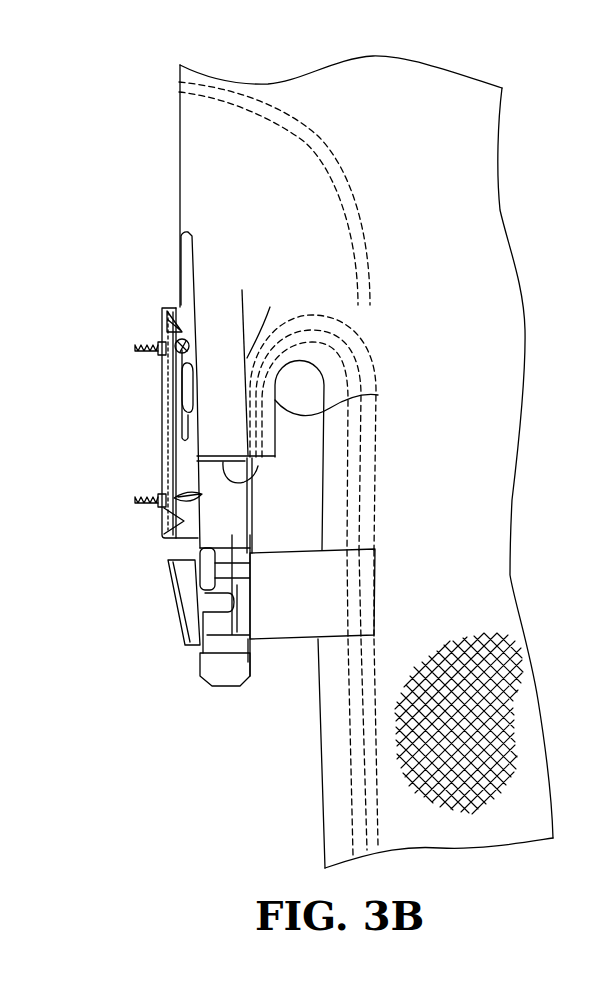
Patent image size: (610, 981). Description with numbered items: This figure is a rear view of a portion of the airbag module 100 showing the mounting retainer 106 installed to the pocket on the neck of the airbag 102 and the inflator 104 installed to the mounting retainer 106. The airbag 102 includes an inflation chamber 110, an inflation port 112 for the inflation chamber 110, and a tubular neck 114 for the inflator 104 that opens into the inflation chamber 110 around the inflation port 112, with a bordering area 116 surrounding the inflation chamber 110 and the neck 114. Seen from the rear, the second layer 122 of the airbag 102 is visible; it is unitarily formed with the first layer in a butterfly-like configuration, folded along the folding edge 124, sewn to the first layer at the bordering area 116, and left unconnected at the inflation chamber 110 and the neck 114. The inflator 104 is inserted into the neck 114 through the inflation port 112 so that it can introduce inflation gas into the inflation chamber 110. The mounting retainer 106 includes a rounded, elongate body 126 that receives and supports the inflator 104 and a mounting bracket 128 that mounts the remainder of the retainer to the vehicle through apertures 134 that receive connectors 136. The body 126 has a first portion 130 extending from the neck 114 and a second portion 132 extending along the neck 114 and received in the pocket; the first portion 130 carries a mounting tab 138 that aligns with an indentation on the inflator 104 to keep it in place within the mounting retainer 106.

The airbag module 100 is at (160, 113).
The airbag 102 is at (176, 148).
The inflator 104 is at (213, 650).
The mounting retainer 106 is at (200, 549).
The inflation chamber 110 is at (452, 113).
The inflation port 112 is at (245, 493).
The tubular neck 114 is at (378, 395).
The bordering area 116 is at (348, 787).
The second layer 122 is at (478, 166).
The folding edge 124 is at (176, 200).
The body 126 is at (153, 605).
The mounting bracket 128 is at (162, 308).
The first portion 130 is at (190, 647).
The second portion 132 is at (177, 308).
The apertures 134 is at (160, 352).
The connectors 136 is at (134, 350).
The mounting tab 138 is at (205, 602).